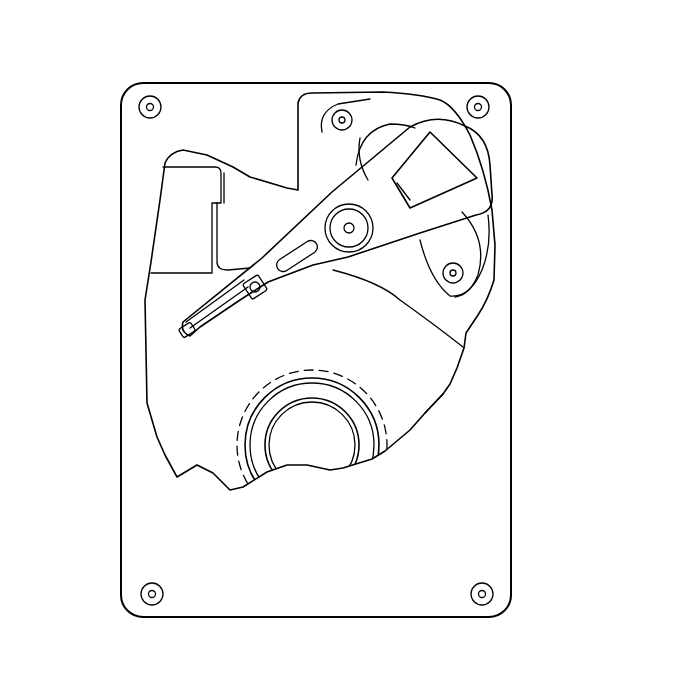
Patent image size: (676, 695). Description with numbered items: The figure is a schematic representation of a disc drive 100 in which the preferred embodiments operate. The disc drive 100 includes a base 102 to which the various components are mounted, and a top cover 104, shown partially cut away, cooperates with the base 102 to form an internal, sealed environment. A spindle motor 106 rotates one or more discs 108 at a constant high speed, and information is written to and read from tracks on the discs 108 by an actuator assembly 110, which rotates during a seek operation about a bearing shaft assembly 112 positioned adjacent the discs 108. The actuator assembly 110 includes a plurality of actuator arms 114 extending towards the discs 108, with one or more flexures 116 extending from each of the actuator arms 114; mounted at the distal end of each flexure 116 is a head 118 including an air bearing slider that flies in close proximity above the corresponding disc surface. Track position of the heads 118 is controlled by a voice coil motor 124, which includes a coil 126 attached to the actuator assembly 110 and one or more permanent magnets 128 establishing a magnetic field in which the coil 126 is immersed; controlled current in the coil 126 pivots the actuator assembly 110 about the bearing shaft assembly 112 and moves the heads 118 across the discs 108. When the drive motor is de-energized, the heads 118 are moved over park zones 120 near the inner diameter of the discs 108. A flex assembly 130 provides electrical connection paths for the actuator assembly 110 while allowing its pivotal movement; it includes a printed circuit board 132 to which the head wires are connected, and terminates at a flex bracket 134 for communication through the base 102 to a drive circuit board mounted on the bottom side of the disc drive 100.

The disc drive 100 is at (148, 56).
The base 102 is at (158, 298).
The top cover 104 is at (155, 512).
The spindle motor 106 is at (313, 450).
The disc 108 is at (425, 390).
The actuator assembly 110 is at (337, 262).
The bearing shaft assembly 112 is at (350, 230).
The actuator arm 114 is at (310, 273).
The flexure 116 is at (220, 310).
The head 118 is at (185, 333).
The park zone 120 is at (235, 440).
The voice coil motor 124 is at (388, 128).
The coil 126 is at (473, 170).
The permanent magnet 128 is at (368, 130).
The flex assembly 130 is at (300, 231).
The printed circuit board 132 is at (322, 203).
The flex bracket 134 is at (178, 230).